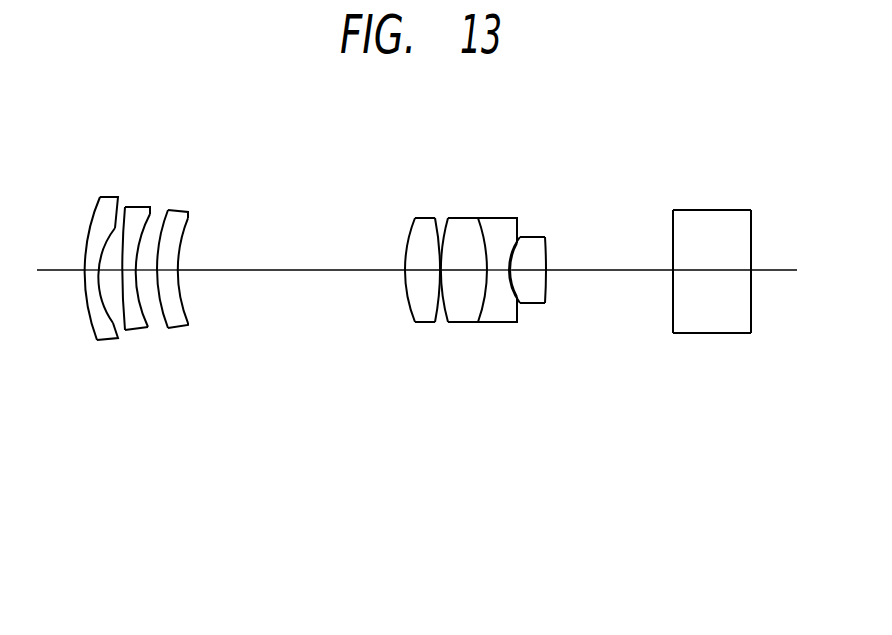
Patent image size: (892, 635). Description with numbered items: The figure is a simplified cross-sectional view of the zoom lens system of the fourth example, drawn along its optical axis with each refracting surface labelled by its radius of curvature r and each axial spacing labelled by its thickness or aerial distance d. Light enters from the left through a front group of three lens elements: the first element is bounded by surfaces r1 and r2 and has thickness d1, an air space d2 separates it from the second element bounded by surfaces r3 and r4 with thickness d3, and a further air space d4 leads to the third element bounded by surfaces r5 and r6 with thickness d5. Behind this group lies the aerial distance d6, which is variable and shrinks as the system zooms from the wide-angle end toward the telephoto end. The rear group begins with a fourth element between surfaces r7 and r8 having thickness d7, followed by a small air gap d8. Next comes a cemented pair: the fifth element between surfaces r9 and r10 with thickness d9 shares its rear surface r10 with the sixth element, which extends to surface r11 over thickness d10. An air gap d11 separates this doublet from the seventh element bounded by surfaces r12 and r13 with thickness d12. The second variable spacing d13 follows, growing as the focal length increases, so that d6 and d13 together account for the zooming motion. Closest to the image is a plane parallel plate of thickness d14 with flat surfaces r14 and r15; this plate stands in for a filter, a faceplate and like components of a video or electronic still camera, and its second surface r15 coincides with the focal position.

The radius of curvature of surface 1 r1 is at (98, 205).
The radius of curvature of surface 2 r2 is at (111, 197).
The radius of curvature of surface 3 r3 is at (127, 207).
The radius of curvature of surface 4 r4 is at (153, 213).
The radius of curvature of surface 5 r5 is at (167, 208).
The radius of curvature of surface 6 r6 is at (192, 212).
The radius of curvature of surface 7 r7 is at (413, 233).
The radius of curvature of surface 8 r8 is at (440, 223).
The radius of curvature of surface 9 r9 is at (440, 230).
The radius of curvature of surface 10 r10 is at (480, 223).
The radius of curvature of surface 11 r11 is at (512, 243).
The radius of curvature of surface 12 r12 is at (525, 237).
The radius of curvature of surface 13 r13 is at (547, 240).
The radius of curvature of surface 14 r14 is at (672, 222).
The radius of curvature of surface 15 r15 is at (752, 217).
The thickness of first lens element d1 is at (89, 275).
The aerial distance between first and second lens elements d2 is at (113, 275).
The thickness of second lens element d3 is at (140, 273).
The aerial distance between second and third lens elements d4 is at (147, 273).
The thickness of third lens element d5 is at (170, 275).
The variable aerial distance between third and fourth lens elements d6 is at (299, 272).
The thickness of fourth lens element d7 is at (420, 273).
The aerial distance between fourth and fifth lens elements d8 is at (433, 273).
The thickness of fifth lens element d9 is at (462, 273).
The thickness of sixth lens element d10 is at (498, 273).
The aerial distance between sixth and seventh lens elements d11 is at (512, 273).
The thickness of seventh lens element d12 is at (532, 273).
The variable aerial distance between seventh lens element and plane parallel plate d13 is at (613, 273).
The thickness of plane parallel plate d14 is at (715, 273).